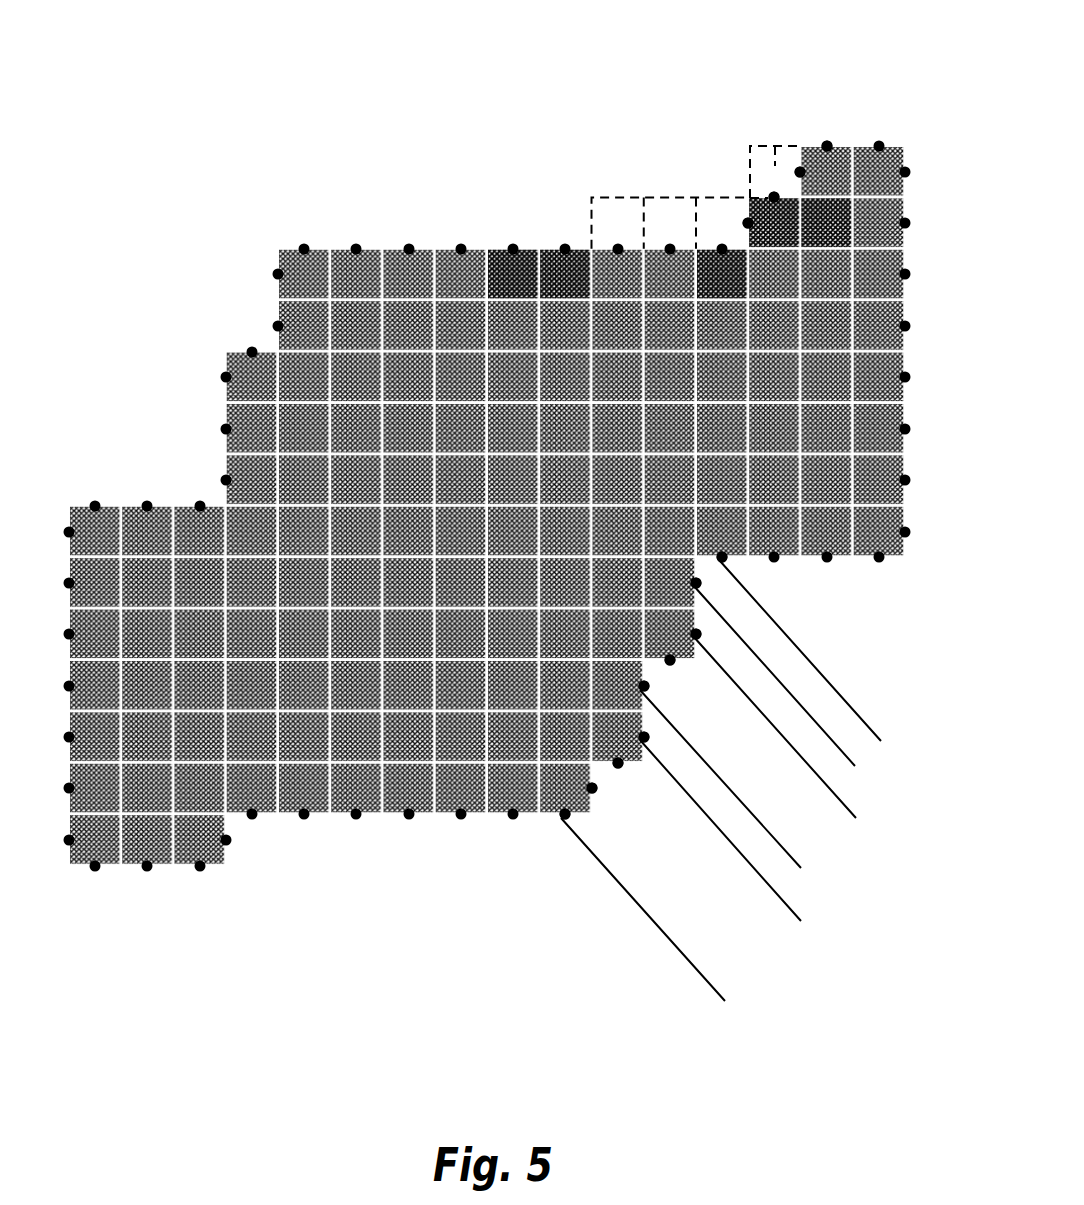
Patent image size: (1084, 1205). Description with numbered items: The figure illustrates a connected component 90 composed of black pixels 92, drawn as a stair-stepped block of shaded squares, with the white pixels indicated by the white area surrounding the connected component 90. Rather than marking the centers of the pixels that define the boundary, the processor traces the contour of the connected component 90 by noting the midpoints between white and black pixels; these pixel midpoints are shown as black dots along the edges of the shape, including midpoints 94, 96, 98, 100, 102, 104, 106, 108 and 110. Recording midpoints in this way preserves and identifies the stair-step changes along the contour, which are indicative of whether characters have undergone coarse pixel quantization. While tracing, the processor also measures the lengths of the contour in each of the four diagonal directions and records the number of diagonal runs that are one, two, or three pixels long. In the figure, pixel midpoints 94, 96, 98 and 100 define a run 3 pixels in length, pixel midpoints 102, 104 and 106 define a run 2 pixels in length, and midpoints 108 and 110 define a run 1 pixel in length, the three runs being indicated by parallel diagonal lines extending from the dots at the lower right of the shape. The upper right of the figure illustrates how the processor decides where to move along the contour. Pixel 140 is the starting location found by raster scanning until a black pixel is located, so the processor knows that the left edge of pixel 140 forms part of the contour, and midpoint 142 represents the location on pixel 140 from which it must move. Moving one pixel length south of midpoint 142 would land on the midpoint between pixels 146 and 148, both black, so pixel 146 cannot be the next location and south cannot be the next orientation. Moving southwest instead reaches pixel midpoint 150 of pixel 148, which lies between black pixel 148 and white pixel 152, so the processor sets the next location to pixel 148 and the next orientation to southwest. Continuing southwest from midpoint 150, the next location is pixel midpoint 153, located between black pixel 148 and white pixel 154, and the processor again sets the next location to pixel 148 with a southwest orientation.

The connected component 90 is at (255, 170).
The black pixels 92 is at (713, 272).
The pixel midpoint 94 is at (557, 808).
The pixel midpoint 96 is at (583, 782).
The pixel midpoint 98 is at (609, 757).
The pixel midpoint 100 is at (635, 731).
The pixel midpoint 102 is at (635, 680).
The pixel midpoint 104 is at (661, 654).
The pixel midpoint 106 is at (688, 628).
The pixel midpoint 108 is at (688, 577).
The pixel midpoint 110 is at (714, 549).
The pixel 140 is at (792, 164).
The midpoint 142 is at (819, 138).
The pixel 146 is at (818, 213).
The pixel 148 is at (740, 215).
The pixel midpoint 150 is at (766, 189).
The pixel 152 is at (760, 212).
The pixel midpoint 153 is at (742, 190).
The pixel 154 is at (710, 222).
The run one pixel in length 1 is at (865, 724).
The run two pixels in length 2 is at (839, 801).
The run three pixels in length 3 is at (783, 900).